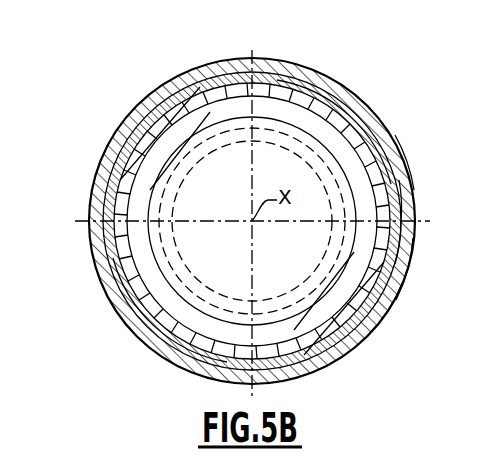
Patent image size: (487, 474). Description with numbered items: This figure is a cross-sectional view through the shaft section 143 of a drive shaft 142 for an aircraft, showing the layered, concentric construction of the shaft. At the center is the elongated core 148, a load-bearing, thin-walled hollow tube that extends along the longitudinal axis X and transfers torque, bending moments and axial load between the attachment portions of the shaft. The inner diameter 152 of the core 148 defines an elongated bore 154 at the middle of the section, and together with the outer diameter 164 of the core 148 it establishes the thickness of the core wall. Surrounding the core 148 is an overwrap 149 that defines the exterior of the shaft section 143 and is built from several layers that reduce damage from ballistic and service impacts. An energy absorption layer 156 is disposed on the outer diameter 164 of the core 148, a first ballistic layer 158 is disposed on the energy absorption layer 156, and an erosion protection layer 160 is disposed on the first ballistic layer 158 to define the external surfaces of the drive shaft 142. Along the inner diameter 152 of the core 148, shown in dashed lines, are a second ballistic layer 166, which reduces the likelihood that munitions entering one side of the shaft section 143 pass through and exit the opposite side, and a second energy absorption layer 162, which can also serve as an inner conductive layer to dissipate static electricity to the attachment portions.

The drive shaft 142 is at (117, 77).
The shaft section 143 is at (190, 60).
The core 148 is at (270, 97).
The overwrap 149 is at (236, 57).
The inner diameter 152 is at (303, 132).
The bore 154 is at (316, 262).
The energy absorption layer 156 is at (355, 125).
The first ballistic layer 158 is at (390, 143).
The erosion protection layer 160 is at (410, 172).
The second energy absorption layer 162 is at (400, 198).
The outer diameter 164 is at (402, 243).
The second ballistic layer 166 is at (393, 285).